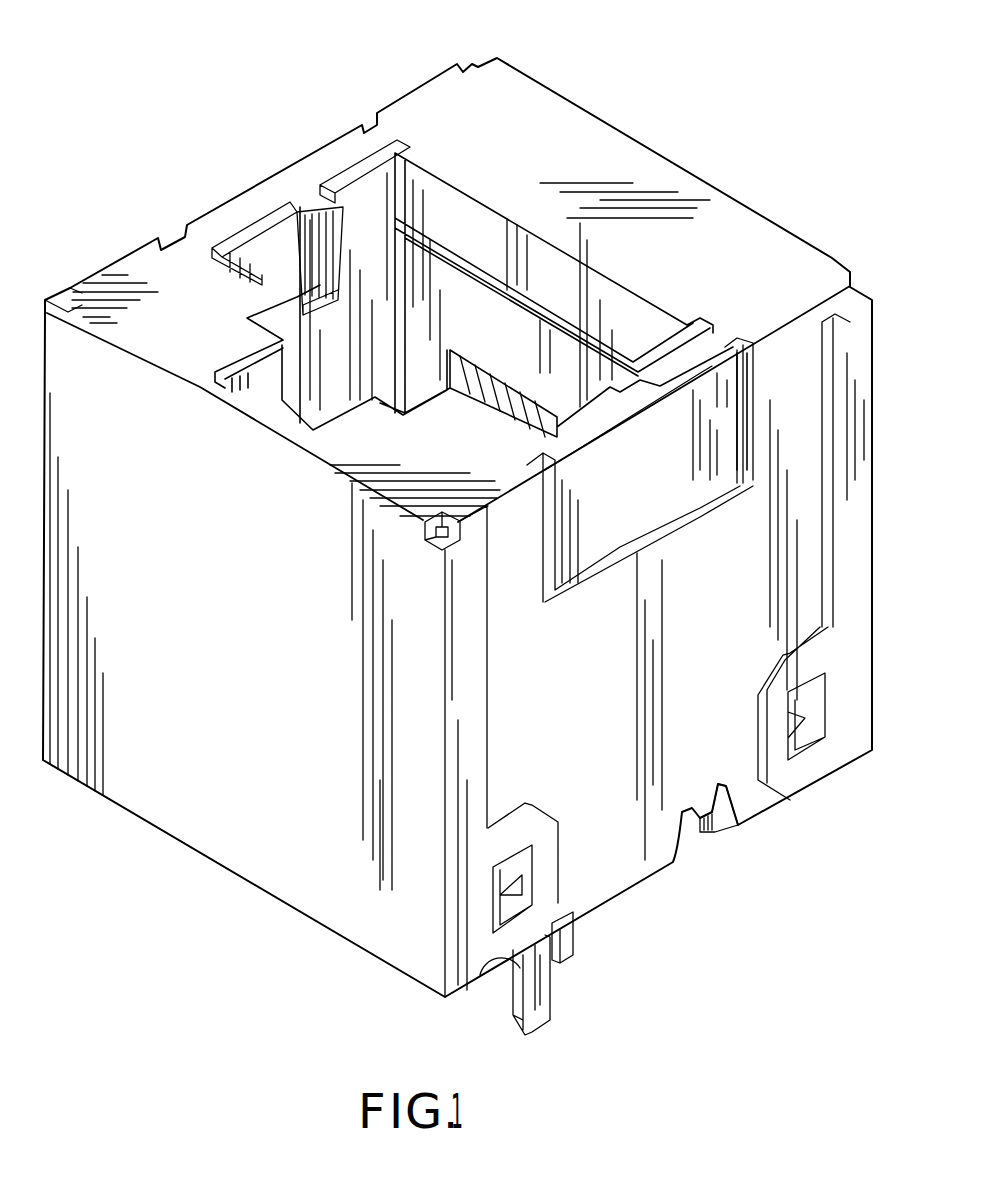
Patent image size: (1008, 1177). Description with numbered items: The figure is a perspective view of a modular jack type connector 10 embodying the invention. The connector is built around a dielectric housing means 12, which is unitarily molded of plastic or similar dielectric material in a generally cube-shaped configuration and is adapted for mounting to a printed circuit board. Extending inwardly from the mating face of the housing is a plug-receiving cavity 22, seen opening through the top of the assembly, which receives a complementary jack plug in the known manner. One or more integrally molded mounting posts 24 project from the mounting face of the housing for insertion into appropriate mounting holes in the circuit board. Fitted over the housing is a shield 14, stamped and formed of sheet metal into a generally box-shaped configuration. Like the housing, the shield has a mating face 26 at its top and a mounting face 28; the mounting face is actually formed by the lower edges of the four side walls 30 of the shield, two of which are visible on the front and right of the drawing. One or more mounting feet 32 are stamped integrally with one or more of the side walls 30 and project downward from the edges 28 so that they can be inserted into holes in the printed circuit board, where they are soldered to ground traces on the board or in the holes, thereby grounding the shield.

The modular jack type connector 10 is at (733, 139).
The dielectric housing means 12 is at (264, 370).
The shield 14 is at (808, 262).
The plug-receiving cavity 22 is at (372, 200).
The mounting posts 24 is at (570, 958).
The mating face 26 is at (568, 122).
The mounting face 28 is at (120, 813).
The side walls 30 is at (263, 606).
The mounting feet 32 is at (535, 1005).